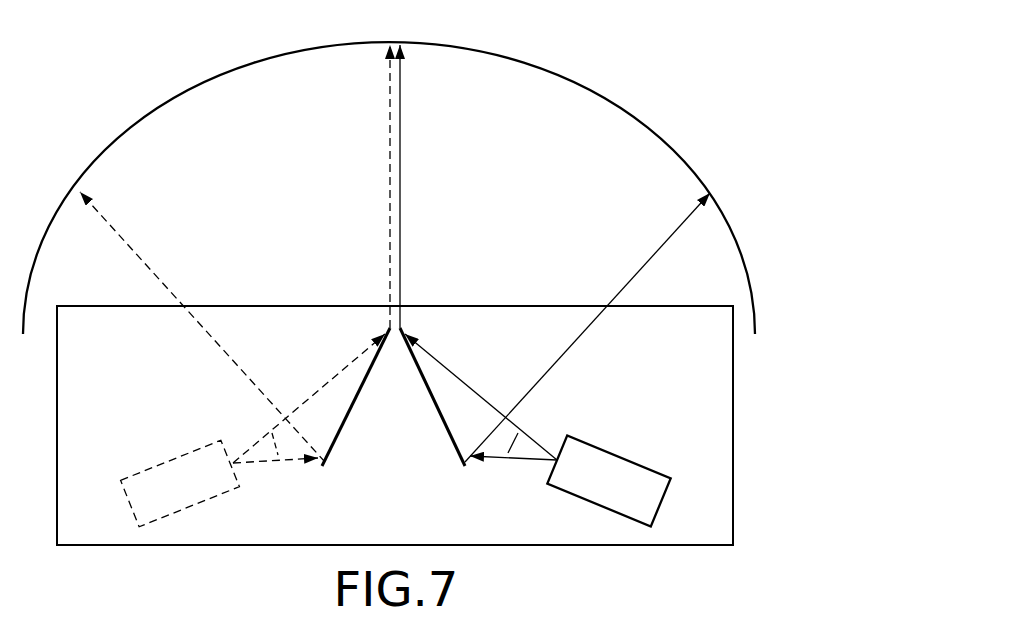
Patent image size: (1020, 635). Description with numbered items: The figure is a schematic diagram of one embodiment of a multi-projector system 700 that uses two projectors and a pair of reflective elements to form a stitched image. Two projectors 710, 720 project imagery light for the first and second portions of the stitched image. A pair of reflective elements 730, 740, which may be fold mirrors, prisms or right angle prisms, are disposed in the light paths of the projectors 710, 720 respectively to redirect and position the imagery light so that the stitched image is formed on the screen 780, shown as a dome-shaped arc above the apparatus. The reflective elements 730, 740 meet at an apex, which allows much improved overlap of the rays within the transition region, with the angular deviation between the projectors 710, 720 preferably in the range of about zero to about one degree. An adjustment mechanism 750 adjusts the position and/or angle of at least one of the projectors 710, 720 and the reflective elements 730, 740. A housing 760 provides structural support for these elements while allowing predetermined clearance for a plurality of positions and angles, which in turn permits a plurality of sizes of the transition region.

The multi-projector system 700 is at (421, 311).
The projector 710 is at (232, 359).
The projector 720 is at (557, 359).
The reflective element 730 is at (331, 448).
The reflective element 740 is at (454, 442).
The adjustment mechanism 750 is at (418, 372).
The housing 760 is at (733, 500).
The screen 780 is at (605, 98).